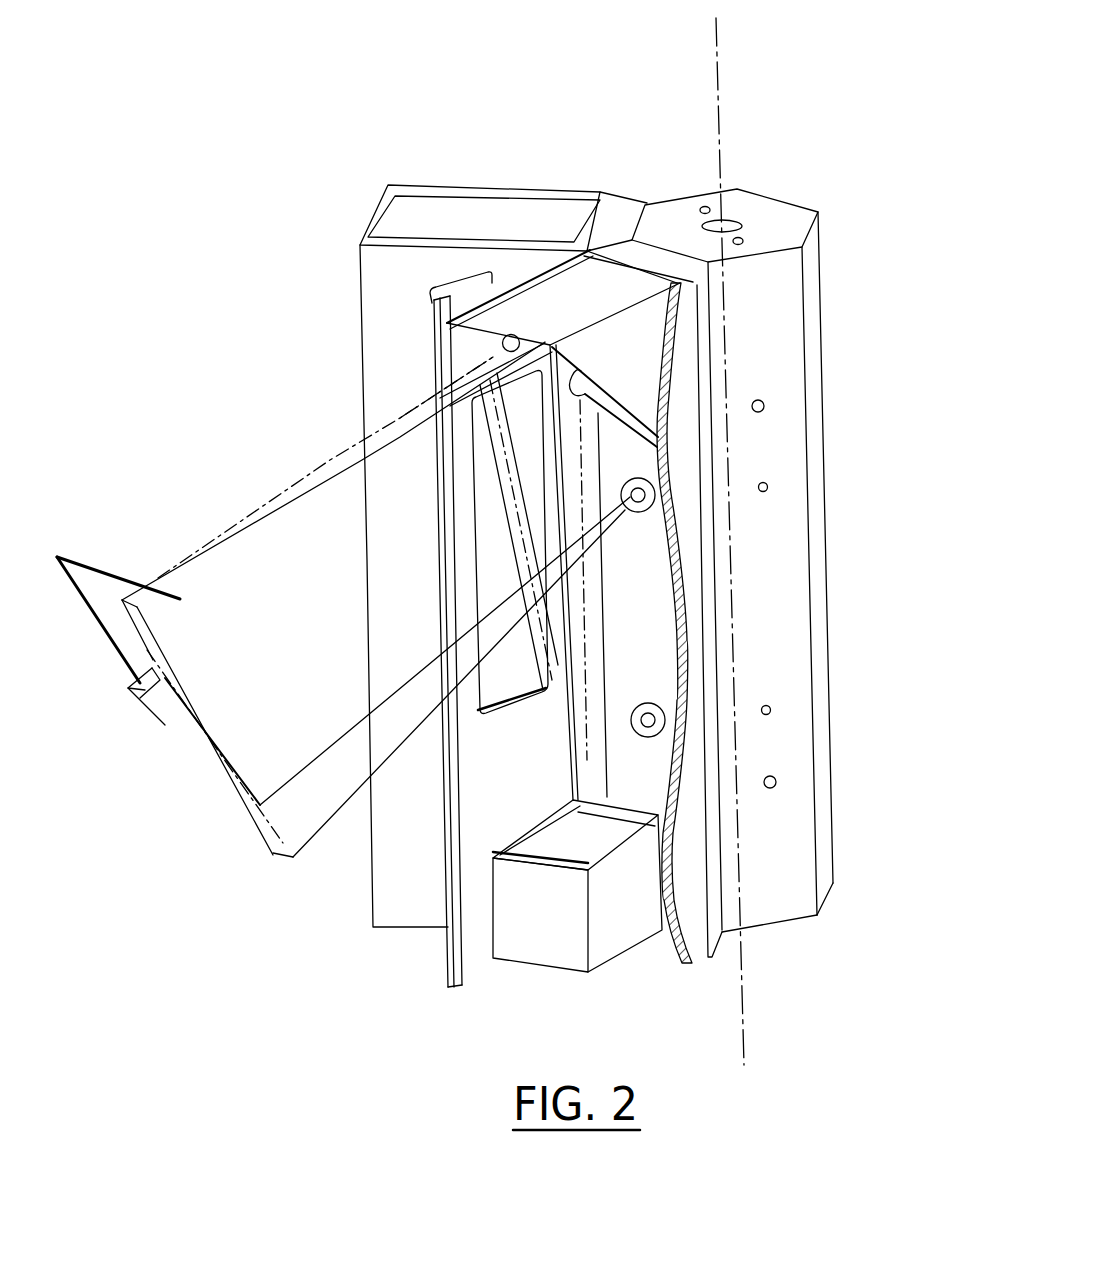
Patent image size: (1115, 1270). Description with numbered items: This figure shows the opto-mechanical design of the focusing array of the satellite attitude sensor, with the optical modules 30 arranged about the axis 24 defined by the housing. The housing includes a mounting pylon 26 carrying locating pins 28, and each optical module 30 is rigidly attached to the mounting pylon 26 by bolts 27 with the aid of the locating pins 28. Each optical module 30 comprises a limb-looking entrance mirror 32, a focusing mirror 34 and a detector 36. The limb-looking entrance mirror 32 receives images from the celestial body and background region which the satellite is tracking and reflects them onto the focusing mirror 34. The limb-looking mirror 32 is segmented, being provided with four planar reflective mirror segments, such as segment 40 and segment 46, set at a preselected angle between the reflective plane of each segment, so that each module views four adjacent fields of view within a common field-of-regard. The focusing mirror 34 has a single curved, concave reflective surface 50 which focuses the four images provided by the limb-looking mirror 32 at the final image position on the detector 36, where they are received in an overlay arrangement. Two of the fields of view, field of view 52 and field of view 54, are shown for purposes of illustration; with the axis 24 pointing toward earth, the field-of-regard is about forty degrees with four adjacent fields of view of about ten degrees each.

The axis 24 is at (722, 112).
The mounting pylon 26 is at (780, 200).
The bolts 27 is at (656, 497).
The locating pins 28 is at (765, 406).
The optical module 30 is at (523, 190).
The limb-looking entrance mirror 32 is at (615, 207).
The focusing mirror 34 is at (632, 910).
The detector 36 is at (452, 280).
The planar reflective mirror segment 40 is at (578, 388).
The planar reflective mirror segment 46 is at (514, 338).
The curved reflective surface 50 is at (565, 836).
The field of view 52 is at (162, 728).
The field of view 54 is at (202, 556).